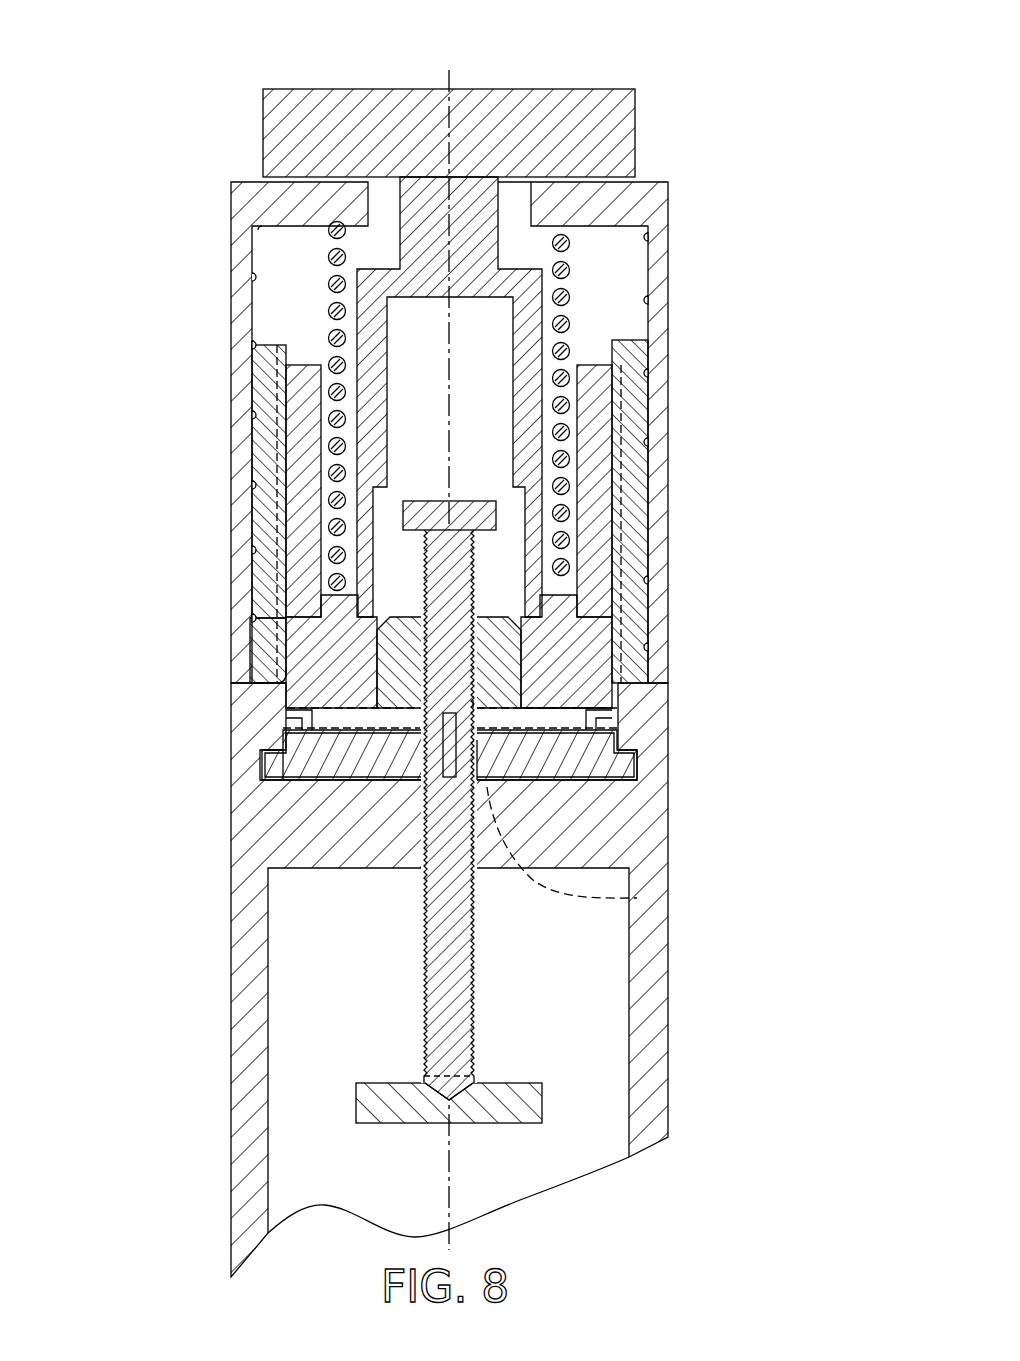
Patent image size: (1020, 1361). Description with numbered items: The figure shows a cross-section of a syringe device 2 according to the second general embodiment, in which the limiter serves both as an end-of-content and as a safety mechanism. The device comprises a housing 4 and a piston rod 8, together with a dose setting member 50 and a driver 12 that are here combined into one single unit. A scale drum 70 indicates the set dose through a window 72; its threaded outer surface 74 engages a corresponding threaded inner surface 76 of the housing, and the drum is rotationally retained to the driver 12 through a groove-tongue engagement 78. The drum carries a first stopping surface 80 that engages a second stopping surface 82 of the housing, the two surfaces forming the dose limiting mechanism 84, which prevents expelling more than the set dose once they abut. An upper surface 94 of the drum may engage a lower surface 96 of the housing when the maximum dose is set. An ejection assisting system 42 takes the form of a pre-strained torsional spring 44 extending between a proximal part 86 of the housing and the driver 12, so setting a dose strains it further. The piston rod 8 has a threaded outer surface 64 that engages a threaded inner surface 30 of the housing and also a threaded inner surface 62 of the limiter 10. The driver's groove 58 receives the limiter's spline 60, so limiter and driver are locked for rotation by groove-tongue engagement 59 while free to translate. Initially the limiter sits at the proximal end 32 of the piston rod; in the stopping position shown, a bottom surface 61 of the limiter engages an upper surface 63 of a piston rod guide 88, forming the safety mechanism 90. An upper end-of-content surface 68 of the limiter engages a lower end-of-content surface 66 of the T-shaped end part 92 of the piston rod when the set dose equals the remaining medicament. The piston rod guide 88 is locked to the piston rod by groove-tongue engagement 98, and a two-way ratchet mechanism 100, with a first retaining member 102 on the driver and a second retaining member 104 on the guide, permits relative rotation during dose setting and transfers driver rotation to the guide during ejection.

The syringe device 2 is at (196, 118).
The housing 4 is at (143, 185).
The piston rod 8 is at (423, 1013).
The limiter 10 is at (330, 795).
The driver 12 is at (641, 511).
The threaded inner surface of the housing 30 is at (420, 825).
The proximal end of the piston rod 32 is at (466, 487).
The ejection assisting system 42 is at (256, 277).
The torsional spring 44 is at (328, 311).
The dose setting member 50 is at (607, 133).
The groove 58 is at (585, 578).
The groove-tongue engagement 59 is at (285, 742).
The spline 60 is at (385, 628).
The bottom surface of the limiter 61 is at (560, 662).
The threaded inner surface of the limiter 62 is at (545, 622).
The upper surface of the piston rod guide 63 is at (482, 705).
The threaded outer surface of the piston rod 64 is at (473, 1033).
The lower end-of-content surface 66 is at (256, 549).
The upper end-of-content surface 68 is at (478, 632).
The scale drum 70 is at (658, 398).
The window 72 is at (245, 386).
The threaded outer surface of the scale drum 74 is at (640, 350).
The threaded inner surface of the housing 76 is at (641, 300).
The groove-tongue engagement 78 is at (256, 415).
The first stopping surface 80 is at (250, 660).
The second stopping surface 82 is at (262, 690).
The dose limiting mechanism 84 is at (250, 673).
The proximal part of the housing 86 is at (646, 237).
The piston rod guide 88 is at (607, 765).
The safety mechanism 90 is at (458, 760).
The T-shaped end part 92 is at (290, 493).
The upper surface of the drum 94 is at (262, 346).
The lower surface of the housing 96 is at (262, 230).
The groove-tongue engagement 98 is at (637, 898).
The two-way ratchet mechanism 100 is at (290, 722).
The first retaining member 102 is at (614, 714).
The second retaining member 104 is at (483, 745).